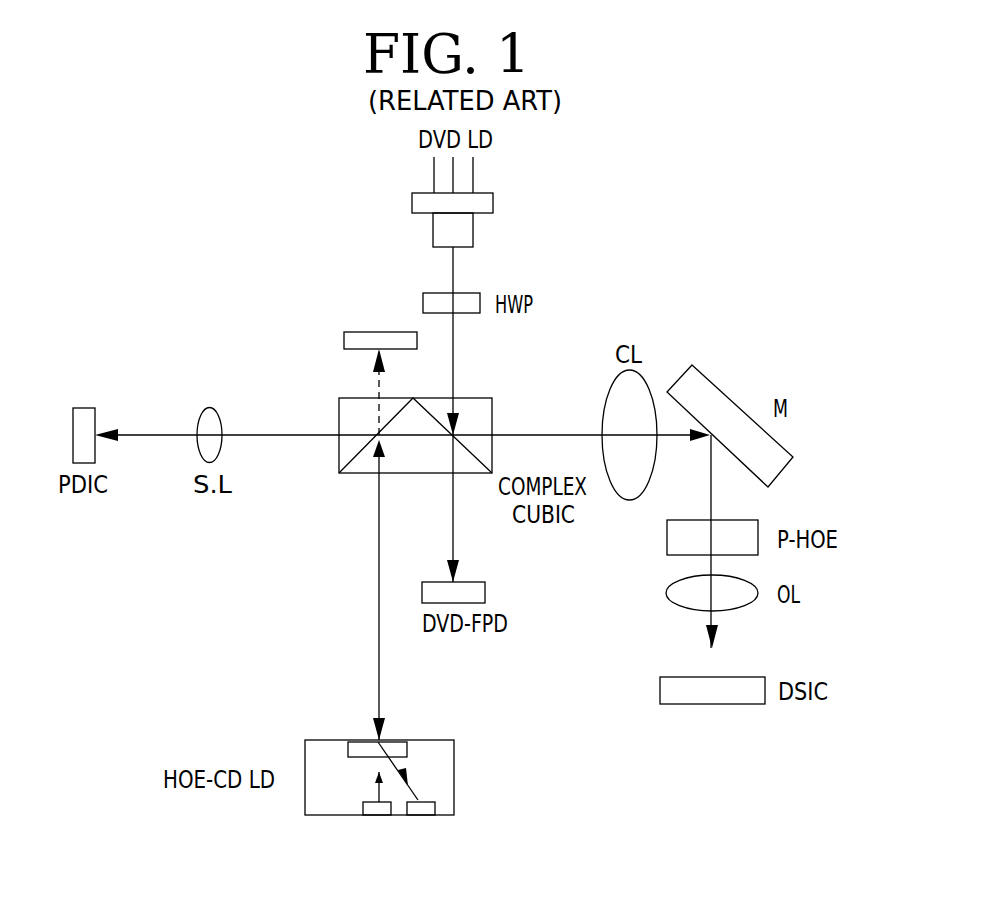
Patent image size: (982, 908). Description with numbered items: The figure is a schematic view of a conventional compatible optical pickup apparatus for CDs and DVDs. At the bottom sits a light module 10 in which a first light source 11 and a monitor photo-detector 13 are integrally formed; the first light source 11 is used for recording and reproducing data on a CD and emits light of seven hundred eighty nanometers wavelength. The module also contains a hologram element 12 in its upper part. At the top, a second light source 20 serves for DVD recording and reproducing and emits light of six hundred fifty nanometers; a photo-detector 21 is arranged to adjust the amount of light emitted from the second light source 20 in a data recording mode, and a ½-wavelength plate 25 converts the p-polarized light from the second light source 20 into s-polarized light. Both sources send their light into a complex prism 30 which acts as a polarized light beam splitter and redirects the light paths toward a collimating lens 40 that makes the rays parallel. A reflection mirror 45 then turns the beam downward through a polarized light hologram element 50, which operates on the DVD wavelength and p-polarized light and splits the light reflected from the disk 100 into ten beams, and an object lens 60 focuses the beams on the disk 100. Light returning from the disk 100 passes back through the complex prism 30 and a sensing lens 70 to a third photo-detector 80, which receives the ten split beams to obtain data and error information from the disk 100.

The light module 10 is at (293, 806).
The first light source 11 is at (377, 815).
The holographic optical element 12 is at (398, 745).
The monitor photo-detector 13 is at (422, 815).
The second light source 20 is at (493, 193).
The photo-detector 21 is at (485, 592).
The ½-wavelength plate 25 is at (478, 293).
The complex prism 30 is at (490, 398).
The collimating lens 40 is at (647, 380).
The reflection mirror 45 is at (793, 457).
The polarized light hologram element 50 is at (758, 520).
The object lens 60 is at (742, 610).
The sensing lens 70 is at (207, 408).
The third photo-detector 80 is at (83, 408).
The disk 100 is at (765, 704).